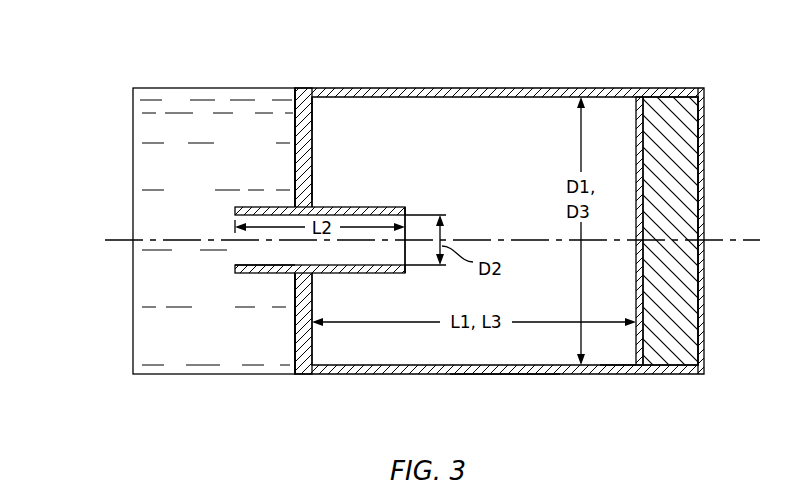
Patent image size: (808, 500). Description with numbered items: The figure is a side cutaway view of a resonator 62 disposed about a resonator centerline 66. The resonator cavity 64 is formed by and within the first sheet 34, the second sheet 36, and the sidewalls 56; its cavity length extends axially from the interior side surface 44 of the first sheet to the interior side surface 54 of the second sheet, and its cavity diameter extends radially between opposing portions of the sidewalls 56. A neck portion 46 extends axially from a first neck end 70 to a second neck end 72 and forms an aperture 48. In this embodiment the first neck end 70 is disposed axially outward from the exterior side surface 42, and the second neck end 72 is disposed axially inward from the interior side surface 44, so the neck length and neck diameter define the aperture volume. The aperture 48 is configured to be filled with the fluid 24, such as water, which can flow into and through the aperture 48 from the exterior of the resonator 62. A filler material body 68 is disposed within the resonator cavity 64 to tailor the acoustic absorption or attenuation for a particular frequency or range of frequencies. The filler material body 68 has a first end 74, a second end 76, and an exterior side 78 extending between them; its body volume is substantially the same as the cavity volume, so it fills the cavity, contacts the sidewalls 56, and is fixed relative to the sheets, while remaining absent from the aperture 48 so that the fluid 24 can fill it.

The fluid 24 is at (186, 283).
The first sheet 34 is at (289, 114).
The second sheet 36 is at (716, 145).
The exterior side surface 42 is at (296, 165).
The interior side surface 44 is at (312, 122).
The neck portion 46 is at (284, 282).
The aperture 48 is at (265, 256).
The interior side surface 54 is at (640, 352).
The sidewalls 56 is at (441, 88).
The resonator 62 is at (595, 65).
The resonator cavity 64 is at (500, 118).
The resonator centerline 66 is at (717, 242).
The filler material body 68 is at (543, 125).
The first neck end 70 is at (235, 208).
The second neck end 72 is at (405, 208).
The first end 74 is at (312, 186).
The second end 76 is at (643, 127).
The exterior side 78 is at (490, 374).